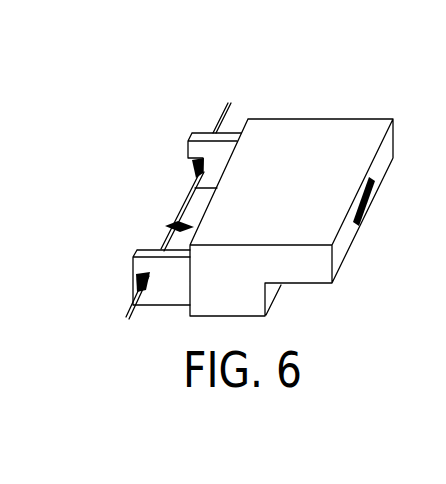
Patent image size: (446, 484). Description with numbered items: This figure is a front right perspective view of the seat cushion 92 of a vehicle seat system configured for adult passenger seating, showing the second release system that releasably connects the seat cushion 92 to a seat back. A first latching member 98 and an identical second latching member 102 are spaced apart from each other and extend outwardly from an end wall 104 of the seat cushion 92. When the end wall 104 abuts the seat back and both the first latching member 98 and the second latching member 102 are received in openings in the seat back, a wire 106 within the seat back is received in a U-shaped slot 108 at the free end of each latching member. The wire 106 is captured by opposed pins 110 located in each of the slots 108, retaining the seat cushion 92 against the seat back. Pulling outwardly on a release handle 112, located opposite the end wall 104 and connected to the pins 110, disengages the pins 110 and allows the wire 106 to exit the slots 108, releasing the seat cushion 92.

The seat cushion 92 is at (340, 88).
The first latching member 98 is at (172, 292).
The second latching member 102 is at (228, 137).
The end wall 104 is at (167, 226).
The wire 106 is at (190, 190).
The U-shaped slot 108 is at (199, 163).
The opposed pins 110 is at (138, 281).
The release handle 112 is at (366, 201).